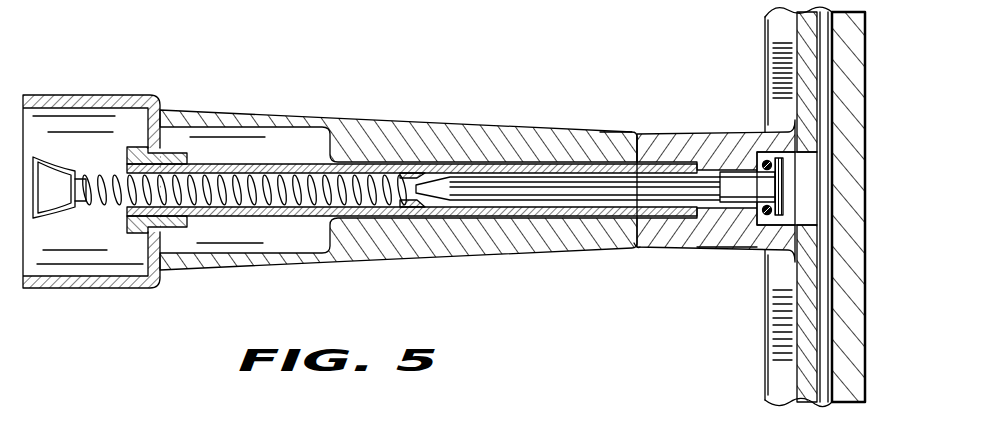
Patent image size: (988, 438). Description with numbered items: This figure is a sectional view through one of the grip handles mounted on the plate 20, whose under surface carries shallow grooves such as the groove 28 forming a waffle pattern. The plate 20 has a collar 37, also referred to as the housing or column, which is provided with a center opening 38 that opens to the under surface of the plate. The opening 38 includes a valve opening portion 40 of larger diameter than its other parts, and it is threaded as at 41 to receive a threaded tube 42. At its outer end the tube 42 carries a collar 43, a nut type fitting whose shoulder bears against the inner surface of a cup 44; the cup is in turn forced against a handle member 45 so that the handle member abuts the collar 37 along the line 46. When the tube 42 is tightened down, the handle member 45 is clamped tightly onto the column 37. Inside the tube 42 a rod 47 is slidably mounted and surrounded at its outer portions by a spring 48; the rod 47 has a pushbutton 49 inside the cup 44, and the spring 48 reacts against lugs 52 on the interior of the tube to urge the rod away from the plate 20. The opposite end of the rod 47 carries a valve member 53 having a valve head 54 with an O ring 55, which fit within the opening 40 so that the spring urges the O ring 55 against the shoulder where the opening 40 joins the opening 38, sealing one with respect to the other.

The plate 20 is at (810, 35).
The groove 28 is at (818, 364).
The collar 37 is at (693, 143).
The center opening 38 is at (710, 205).
The valve opening portion 40 is at (808, 202).
The threads 41 is at (660, 140).
The threaded tube 42 is at (503, 164).
The collar 43 is at (137, 147).
The cup 44 is at (75, 95).
The handle member 45 is at (242, 110).
The line 46 is at (637, 243).
The rod 47 is at (545, 188).
The spring 48 is at (230, 200).
The pushbutton 49 is at (64, 198).
The lugs 52 is at (446, 206).
The valve member 53 is at (733, 182).
The valve head 54 is at (783, 192).
The O ring 55 is at (760, 228).